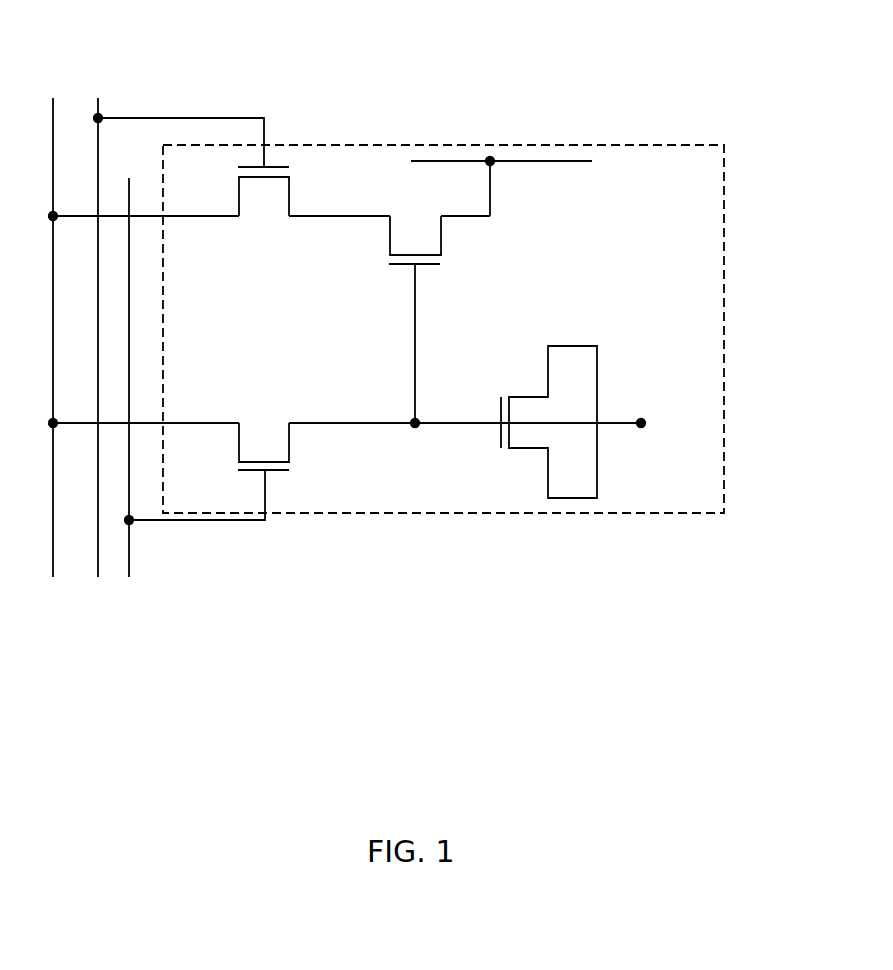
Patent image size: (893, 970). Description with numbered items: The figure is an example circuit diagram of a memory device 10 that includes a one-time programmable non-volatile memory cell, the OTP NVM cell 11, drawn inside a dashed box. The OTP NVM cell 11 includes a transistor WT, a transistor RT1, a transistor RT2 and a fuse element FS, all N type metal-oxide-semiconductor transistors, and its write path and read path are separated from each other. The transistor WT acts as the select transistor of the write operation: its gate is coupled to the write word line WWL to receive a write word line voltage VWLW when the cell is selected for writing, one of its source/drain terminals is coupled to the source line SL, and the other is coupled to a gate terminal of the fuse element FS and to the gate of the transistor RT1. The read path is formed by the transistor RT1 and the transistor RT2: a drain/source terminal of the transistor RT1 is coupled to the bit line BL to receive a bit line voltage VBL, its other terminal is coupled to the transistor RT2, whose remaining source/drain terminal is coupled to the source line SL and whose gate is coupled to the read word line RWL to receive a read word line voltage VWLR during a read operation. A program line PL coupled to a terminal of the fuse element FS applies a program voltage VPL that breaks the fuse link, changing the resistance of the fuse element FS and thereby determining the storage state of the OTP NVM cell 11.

The memory device 10 is at (78, 27).
The OTP NVM cell 11 is at (724, 296).
The source line SL is at (51, 362).
The read word line RWL is at (96, 367).
The write word line WWL is at (128, 411).
The read word line voltage VWLR is at (187, 129).
The write word line voltage VWLW is at (211, 524).
The bit line BL is at (518, 162).
The bit line voltage VBL is at (519, 196).
The program voltage VPL is at (645, 425).
The transistor RT2 is at (263, 204).
The transistor RT1 is at (415, 240).
The transistor WT is at (263, 446).
The fuse element FS is at (549, 408).
The program line PL is at (608, 421).